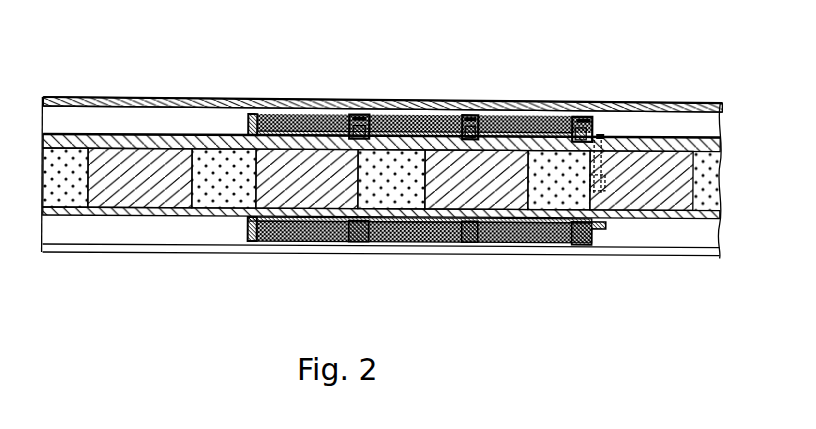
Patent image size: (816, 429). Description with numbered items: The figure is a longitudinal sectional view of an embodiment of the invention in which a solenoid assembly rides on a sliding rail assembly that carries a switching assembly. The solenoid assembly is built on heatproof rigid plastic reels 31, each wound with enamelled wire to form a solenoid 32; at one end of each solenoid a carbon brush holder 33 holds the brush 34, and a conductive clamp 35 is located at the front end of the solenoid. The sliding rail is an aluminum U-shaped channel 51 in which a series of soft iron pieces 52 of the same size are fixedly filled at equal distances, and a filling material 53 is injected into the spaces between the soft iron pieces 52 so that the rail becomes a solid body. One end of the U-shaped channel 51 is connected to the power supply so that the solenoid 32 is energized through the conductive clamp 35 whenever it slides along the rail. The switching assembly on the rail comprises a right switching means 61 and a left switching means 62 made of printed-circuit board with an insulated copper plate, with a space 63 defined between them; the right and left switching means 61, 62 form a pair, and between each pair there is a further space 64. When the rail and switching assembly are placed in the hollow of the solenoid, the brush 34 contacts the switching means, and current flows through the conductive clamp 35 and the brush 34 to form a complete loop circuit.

The space 64 is at (115, 130).
The left switching means 62 is at (148, 133).
The space 63 is at (188, 133).
The right switching means 61 is at (223, 145).
The heatproof rigid plastic reel 31 is at (253, 118).
The solenoid 32 is at (308, 122).
The brush 34 is at (375, 122).
The carbon brush holder 33 is at (472, 122).
The conductive clamp 35 is at (598, 131).
The U-shaped channel 51 is at (162, 216).
The soft iron piece 52 is at (115, 197).
The filling material 53 is at (223, 192).